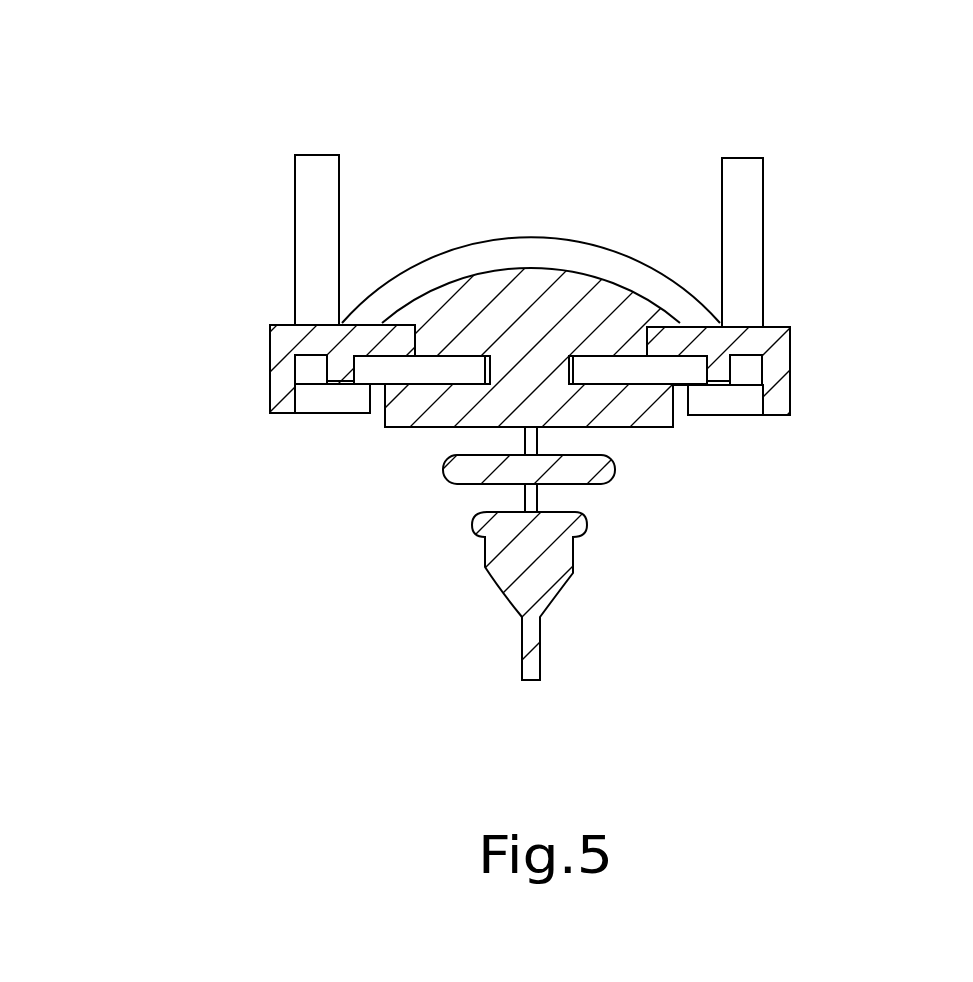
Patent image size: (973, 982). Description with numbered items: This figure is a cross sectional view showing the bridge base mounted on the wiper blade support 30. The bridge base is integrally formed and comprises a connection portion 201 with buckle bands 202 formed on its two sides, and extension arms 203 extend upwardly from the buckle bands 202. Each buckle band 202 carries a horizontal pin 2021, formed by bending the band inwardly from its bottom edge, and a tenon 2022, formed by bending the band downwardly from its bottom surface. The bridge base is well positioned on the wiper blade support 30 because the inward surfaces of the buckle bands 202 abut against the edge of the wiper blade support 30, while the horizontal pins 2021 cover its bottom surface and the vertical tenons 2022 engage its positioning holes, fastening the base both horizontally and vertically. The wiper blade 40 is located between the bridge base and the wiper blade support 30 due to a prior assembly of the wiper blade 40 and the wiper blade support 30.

The connection portion 201 is at (543, 252).
The buckle band 202 is at (272, 340).
The extension arm 203 is at (293, 220).
The horizontal pin 2021 is at (338, 400).
The tenon 2022 is at (707, 390).
The wiper blade support 30 is at (633, 373).
The wiper blade 40 is at (543, 582).